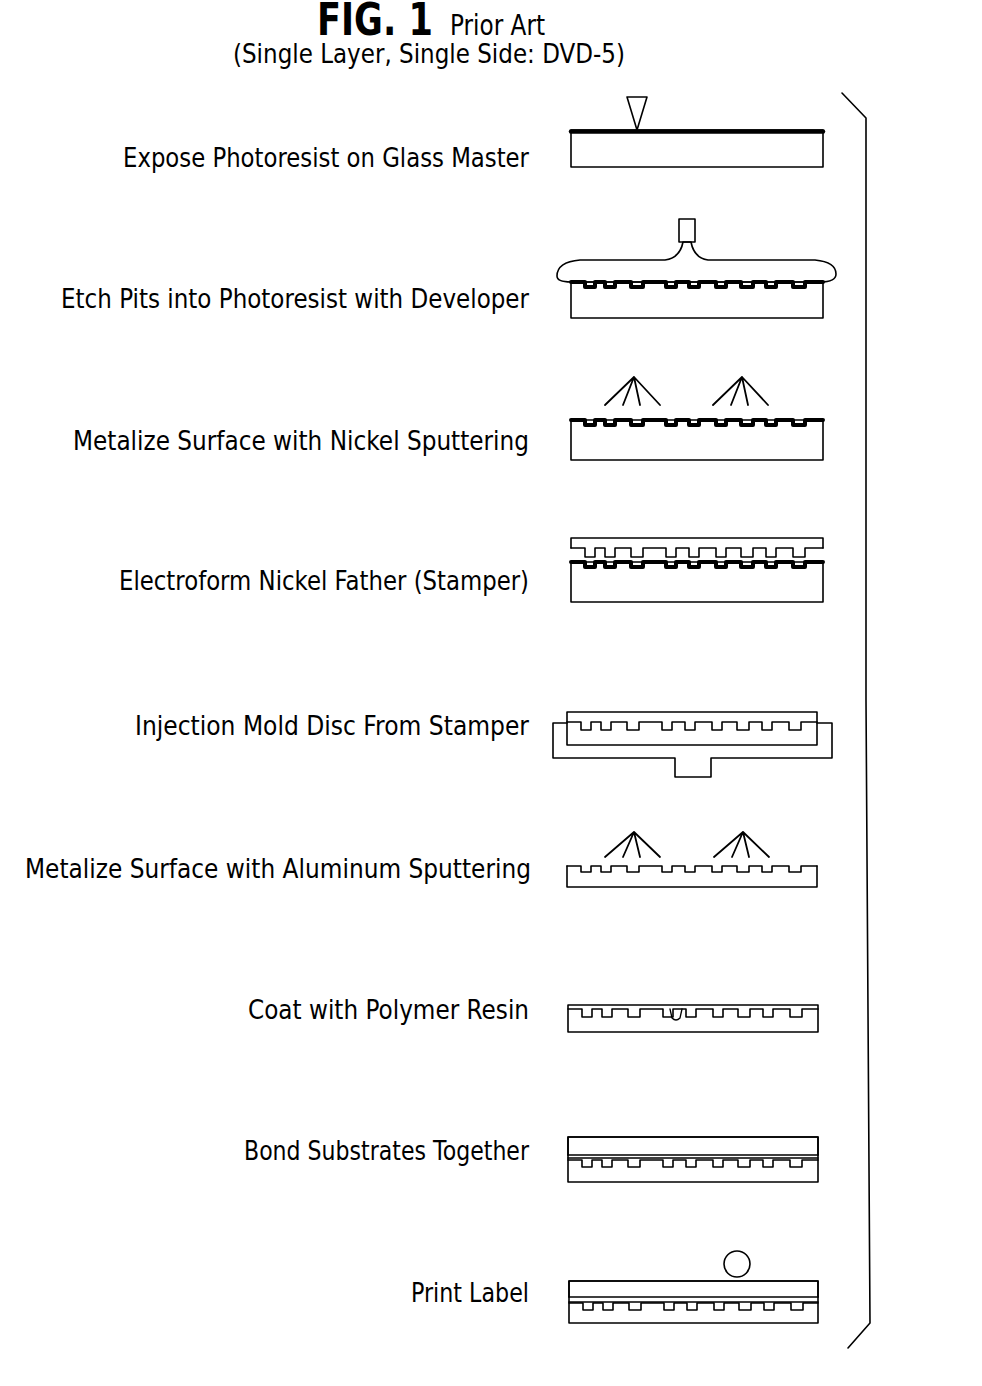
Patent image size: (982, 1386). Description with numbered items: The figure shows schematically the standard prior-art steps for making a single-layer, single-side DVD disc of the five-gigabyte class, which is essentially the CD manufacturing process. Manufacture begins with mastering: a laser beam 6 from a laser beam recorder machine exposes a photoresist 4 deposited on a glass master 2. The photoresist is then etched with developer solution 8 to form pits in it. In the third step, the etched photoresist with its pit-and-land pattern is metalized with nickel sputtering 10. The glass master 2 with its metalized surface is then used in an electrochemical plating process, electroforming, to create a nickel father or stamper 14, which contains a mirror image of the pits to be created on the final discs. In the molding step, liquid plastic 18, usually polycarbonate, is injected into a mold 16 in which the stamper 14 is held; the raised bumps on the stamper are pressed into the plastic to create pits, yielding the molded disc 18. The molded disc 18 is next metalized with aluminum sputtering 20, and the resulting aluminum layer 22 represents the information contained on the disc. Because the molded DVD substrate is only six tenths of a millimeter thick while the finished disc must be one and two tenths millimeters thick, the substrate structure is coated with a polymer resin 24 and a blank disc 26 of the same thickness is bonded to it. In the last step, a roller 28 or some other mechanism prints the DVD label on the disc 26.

The glass master 2 is at (744, 160).
The photoresist 4 is at (720, 129).
The laser beam 6 is at (639, 97).
The developer solution 8 is at (707, 265).
The nickel sputtering 10 is at (735, 385).
The stamper 14 is at (658, 538).
The mold 16 is at (726, 764).
The molded disc 18 is at (612, 732).
The aluminum sputtering 20 is at (727, 843).
The aluminum layer 22 is at (680, 1008).
The polymer resin 24 is at (625, 1010).
The blank disc 26 is at (732, 1143).
The roller 28 is at (732, 1252).